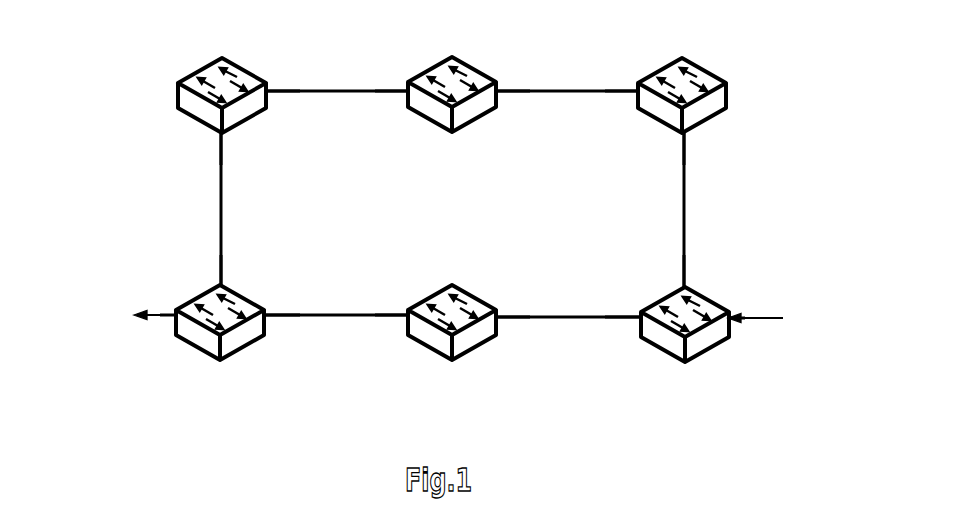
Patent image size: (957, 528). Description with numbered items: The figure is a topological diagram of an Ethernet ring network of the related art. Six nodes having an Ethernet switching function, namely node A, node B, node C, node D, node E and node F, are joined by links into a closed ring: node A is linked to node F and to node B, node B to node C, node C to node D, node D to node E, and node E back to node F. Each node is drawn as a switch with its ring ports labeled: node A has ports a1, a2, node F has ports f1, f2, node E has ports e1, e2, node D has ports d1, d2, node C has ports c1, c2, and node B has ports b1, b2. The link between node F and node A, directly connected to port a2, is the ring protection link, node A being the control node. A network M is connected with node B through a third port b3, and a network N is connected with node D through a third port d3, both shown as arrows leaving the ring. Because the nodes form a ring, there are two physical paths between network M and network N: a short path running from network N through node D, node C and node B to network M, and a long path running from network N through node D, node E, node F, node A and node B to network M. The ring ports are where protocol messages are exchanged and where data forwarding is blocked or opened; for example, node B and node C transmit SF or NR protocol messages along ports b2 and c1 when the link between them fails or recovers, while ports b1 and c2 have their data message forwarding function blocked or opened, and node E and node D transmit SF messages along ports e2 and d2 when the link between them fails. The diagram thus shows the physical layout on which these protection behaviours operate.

The node A is at (222, 76).
The node B is at (220, 340).
The node C is at (452, 340).
The node D is at (685, 342).
The node E is at (682, 76).
The node F is at (452, 75).
The port a1 is at (204, 148).
The port a2 is at (283, 75).
The port b1 is at (284, 336).
The port b2 is at (203, 270).
The port b3 is at (161, 335).
The port c1 is at (513, 338).
The port c2 is at (392, 337).
The port d1 is at (703, 271).
The port d2 is at (622, 337).
The port d3 is at (745, 337).
The port e1 is at (622, 75).
The port e2 is at (703, 149).
The port f1 is at (392, 75).
The port f2 is at (513, 75).
The network M is at (106, 317).
The network N is at (800, 319).